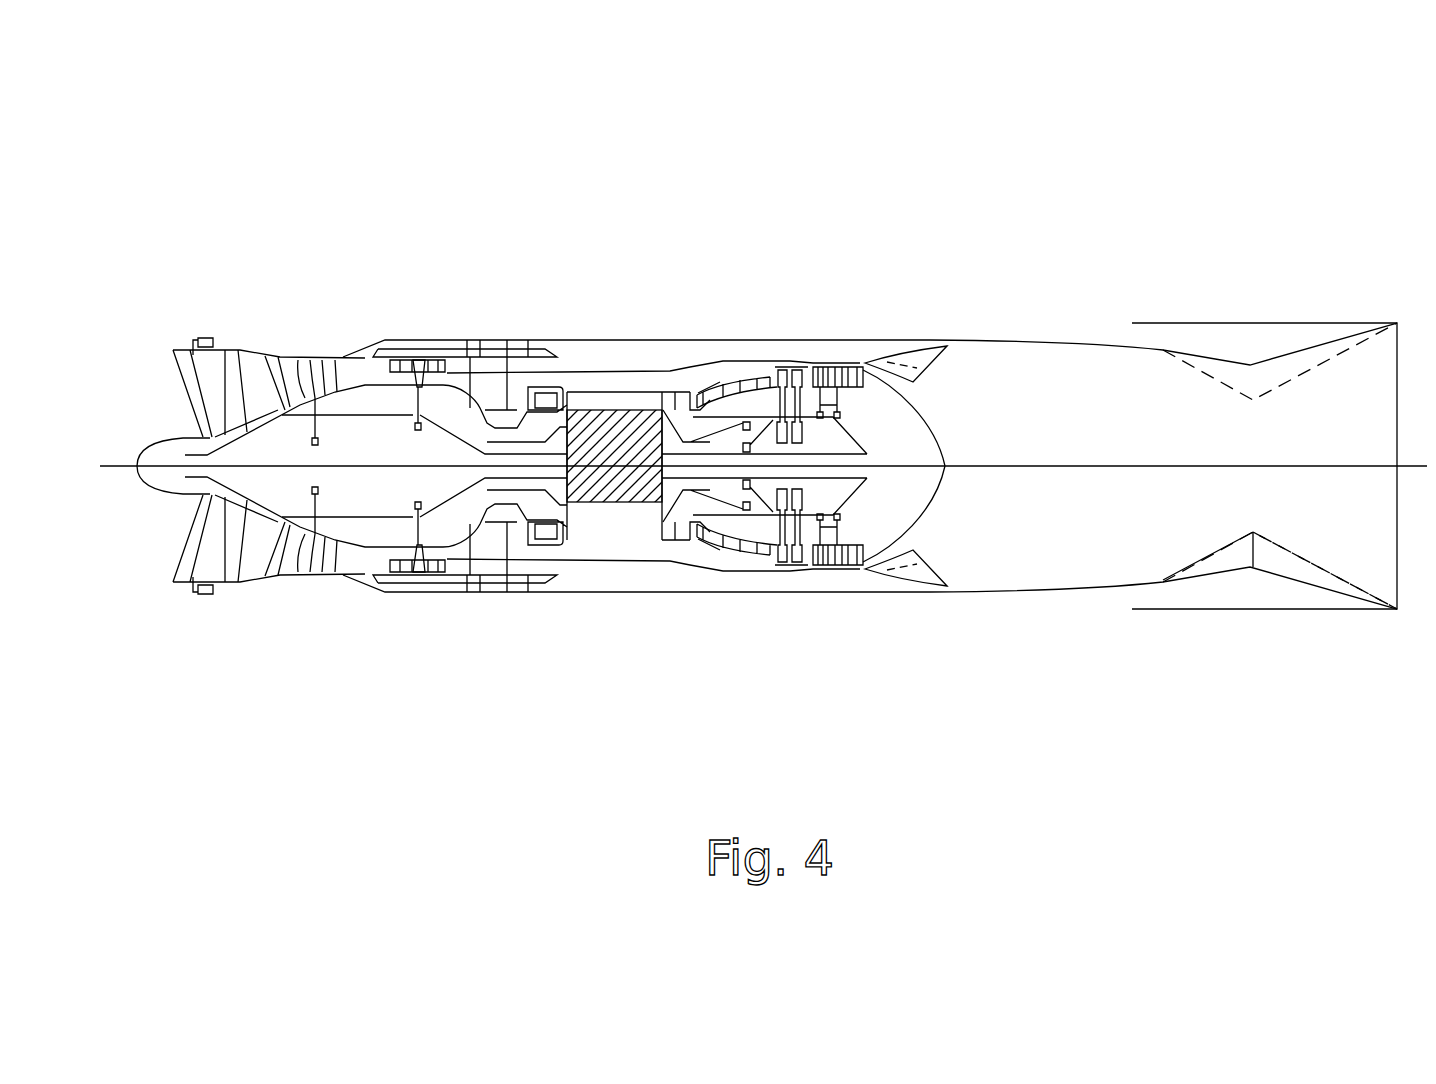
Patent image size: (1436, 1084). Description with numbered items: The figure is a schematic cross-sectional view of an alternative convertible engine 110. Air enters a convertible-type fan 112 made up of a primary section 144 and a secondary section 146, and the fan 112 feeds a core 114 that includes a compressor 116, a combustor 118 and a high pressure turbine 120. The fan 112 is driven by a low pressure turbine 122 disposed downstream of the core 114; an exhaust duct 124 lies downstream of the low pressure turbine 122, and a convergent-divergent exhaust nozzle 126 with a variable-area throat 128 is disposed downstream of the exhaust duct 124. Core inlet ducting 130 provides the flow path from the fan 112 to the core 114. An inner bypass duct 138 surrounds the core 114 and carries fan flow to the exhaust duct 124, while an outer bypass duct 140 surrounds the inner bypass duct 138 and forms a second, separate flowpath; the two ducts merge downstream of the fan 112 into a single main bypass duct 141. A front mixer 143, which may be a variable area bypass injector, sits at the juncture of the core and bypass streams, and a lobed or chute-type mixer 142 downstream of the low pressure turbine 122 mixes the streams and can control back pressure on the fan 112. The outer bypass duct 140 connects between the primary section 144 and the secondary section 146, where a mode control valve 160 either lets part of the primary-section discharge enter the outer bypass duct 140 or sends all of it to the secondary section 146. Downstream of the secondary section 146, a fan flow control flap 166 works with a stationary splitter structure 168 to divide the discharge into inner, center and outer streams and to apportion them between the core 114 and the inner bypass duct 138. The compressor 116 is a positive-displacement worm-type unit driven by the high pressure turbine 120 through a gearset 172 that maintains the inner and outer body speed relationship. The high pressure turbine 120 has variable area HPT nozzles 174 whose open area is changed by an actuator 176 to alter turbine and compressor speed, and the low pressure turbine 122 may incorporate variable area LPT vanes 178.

The convertible engine 110 is at (697, 215).
The fan 112 is at (293, 338).
The core 114 is at (680, 385).
The compressor 116 is at (613, 490).
The combustor 118 is at (720, 545).
The high pressure turbine 120 is at (790, 555).
The low pressure turbine 122 is at (915, 540).
The exhaust duct 124 is at (1082, 416).
The convergent-divergent exhaust nozzle 126 is at (1262, 313).
The throat 128 is at (1253, 567).
The core inlet ducting 130 is at (471, 502).
The inner bypass duct 138 is at (480, 358).
The outer bypass duct 140 is at (425, 342).
The main bypass duct 141 is at (637, 337).
The mixer 142 is at (905, 355).
The front mixer 143 is at (528, 340).
The primary section 144 is at (272, 593).
The secondary section 146 is at (403, 602).
The mode control valve 160 is at (343, 357).
The fan flow control flap 166 is at (450, 355).
The stationary splitter structure 168 is at (435, 575).
The gearset 172 is at (747, 420).
The variable area HPT nozzles 174 is at (757, 553).
The actuator 176 is at (780, 553).
The variable area LPT vanes 178 is at (815, 555).